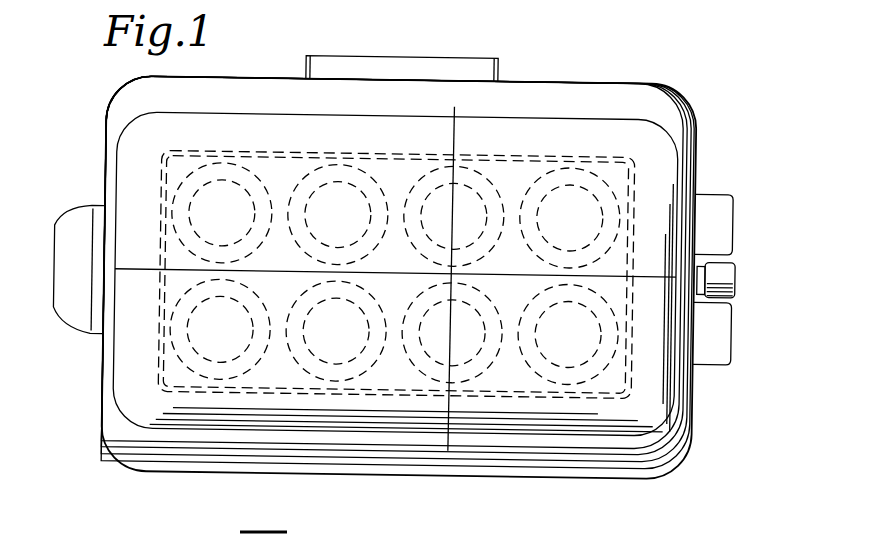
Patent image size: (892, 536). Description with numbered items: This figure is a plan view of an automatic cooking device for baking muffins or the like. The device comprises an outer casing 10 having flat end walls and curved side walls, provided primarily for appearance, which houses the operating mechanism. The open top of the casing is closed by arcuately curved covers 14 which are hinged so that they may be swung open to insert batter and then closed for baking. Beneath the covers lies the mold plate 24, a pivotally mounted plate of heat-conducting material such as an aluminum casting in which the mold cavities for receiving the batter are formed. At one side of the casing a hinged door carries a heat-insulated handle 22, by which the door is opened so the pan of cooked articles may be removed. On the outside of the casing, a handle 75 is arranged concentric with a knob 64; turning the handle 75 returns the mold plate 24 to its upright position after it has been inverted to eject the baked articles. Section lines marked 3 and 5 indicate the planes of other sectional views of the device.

The outer casing 10 is at (102, 176).
The arcuately curved covers 14 is at (662, 184).
The heat-insulated handle 22 is at (437, 70).
The mold plate 24 is at (503, 154).
The knob 64 is at (736, 292).
The handle 75 is at (700, 228).
The section line 3- 3 is at (70, 273).
The section line 5- 5 is at (488, 106).